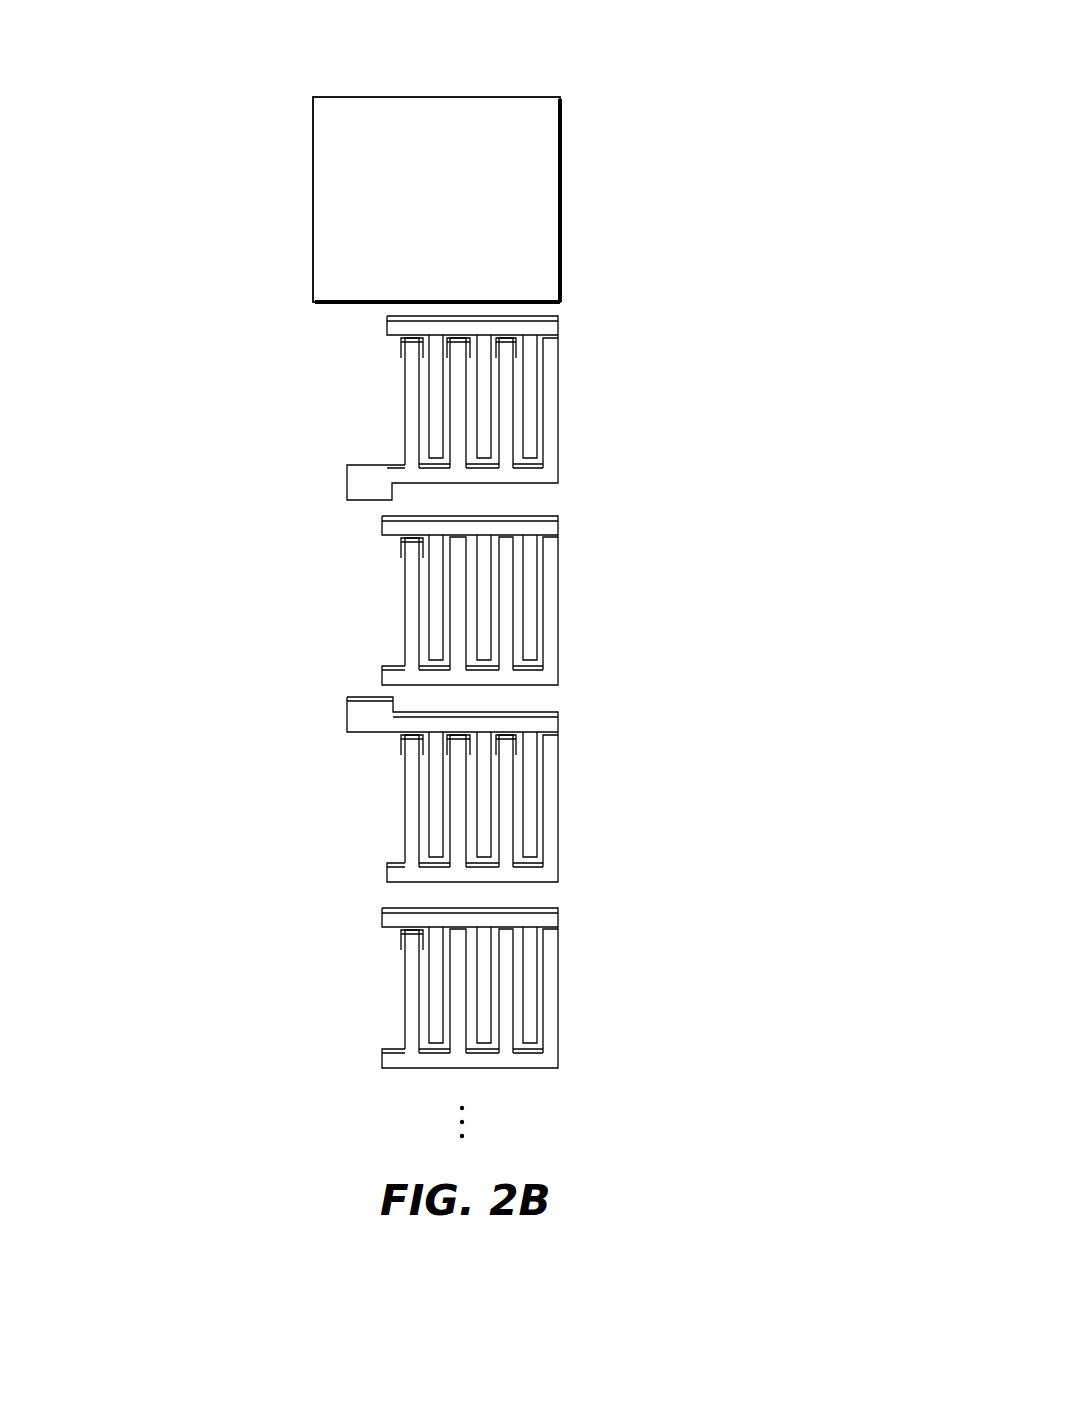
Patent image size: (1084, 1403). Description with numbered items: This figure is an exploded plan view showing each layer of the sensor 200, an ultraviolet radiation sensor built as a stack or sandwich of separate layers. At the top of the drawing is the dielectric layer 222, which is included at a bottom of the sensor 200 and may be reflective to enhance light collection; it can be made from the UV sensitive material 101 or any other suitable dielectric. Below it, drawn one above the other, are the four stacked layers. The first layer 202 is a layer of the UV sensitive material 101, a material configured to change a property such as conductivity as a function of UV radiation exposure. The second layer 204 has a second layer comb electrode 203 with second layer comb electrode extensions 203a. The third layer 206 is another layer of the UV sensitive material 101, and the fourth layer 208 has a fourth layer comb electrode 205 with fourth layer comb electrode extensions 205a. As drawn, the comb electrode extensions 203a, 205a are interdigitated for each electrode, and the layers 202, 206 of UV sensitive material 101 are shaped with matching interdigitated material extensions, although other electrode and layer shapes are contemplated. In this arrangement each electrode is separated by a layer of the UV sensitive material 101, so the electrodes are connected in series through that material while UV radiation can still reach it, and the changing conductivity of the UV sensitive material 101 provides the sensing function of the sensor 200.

The sensor 200 is at (648, 118).
The dielectric layer 222 is at (373, 113).
The first layer 202 is at (605, 395).
The fourth layer comb electrode 205 is at (558, 316).
The fourth layer comb electrode extensions 205a is at (404, 387).
The UV sensitive material 101 is at (558, 517).
The second layer 204 is at (586, 637).
The second layer comb electrode 203 is at (558, 713).
The second layer comb electrode extensions 203a is at (404, 812).
The third layer 206 is at (592, 827).
The fourth layer 208 is at (580, 923).